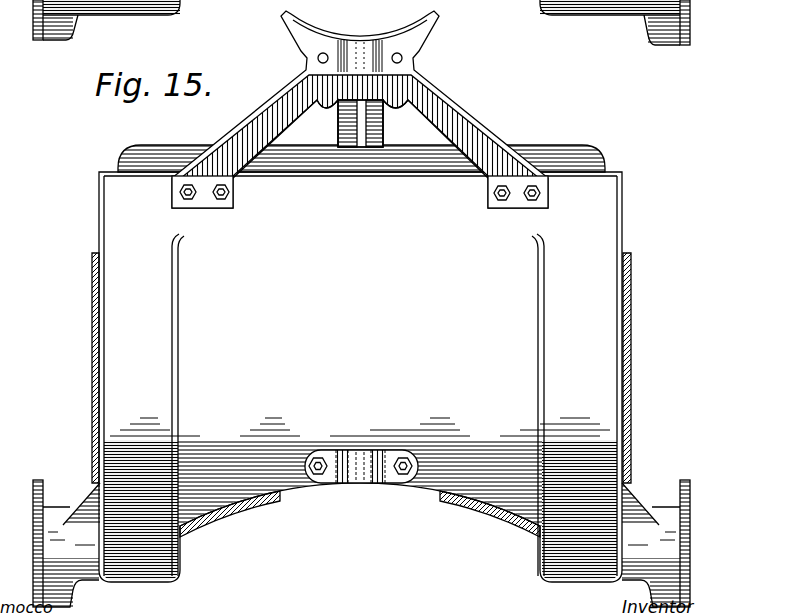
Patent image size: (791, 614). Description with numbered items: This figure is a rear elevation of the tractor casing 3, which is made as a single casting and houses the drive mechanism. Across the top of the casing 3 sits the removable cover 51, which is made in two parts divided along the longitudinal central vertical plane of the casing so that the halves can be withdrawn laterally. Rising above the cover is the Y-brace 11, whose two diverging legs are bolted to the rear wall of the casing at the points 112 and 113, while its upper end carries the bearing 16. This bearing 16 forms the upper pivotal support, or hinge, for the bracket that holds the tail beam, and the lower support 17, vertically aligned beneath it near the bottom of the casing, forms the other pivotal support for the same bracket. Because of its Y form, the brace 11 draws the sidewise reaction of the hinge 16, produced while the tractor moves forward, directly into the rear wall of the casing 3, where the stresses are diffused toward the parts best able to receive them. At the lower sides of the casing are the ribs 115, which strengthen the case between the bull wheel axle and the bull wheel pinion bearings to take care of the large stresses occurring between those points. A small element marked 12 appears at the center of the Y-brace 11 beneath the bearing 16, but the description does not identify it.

The casing 3 is at (361, 377).
The Y-brace 11 is at (448, 108).
The central column 12 is at (384, 132).
The bearing 16 is at (357, 54).
The lower support 17 is at (361, 474).
The removable cover 51 is at (553, 153).
The connection point 112 is at (513, 199).
The connection point 113 is at (203, 190).
The ribs 115 is at (84, 499).